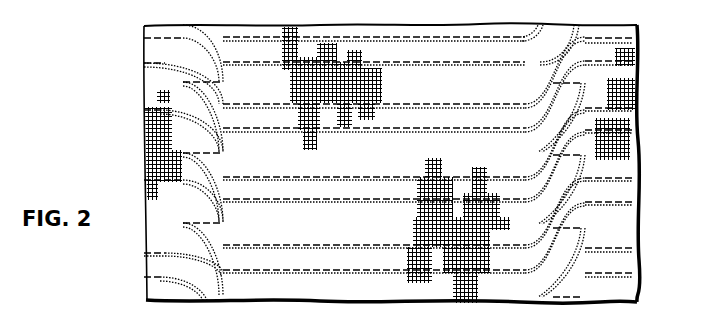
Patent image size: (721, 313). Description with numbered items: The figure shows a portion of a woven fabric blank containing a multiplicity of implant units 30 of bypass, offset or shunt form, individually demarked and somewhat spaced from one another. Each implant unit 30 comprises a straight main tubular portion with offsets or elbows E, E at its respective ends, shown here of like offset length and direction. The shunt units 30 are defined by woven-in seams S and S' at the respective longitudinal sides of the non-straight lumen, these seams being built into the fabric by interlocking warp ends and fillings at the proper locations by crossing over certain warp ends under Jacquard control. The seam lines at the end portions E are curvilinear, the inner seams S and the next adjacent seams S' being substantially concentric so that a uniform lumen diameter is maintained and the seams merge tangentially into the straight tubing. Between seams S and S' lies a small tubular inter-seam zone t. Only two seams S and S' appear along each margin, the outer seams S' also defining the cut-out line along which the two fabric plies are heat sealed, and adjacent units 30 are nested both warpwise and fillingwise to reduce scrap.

The implant unit 30 is at (388, 162).
The offset or elbow E is at (536, 98).
The small tubular inter-seam zone t is at (400, 140).
The inner seam S is at (477, 175).
The outer seam S' is at (259, 191).